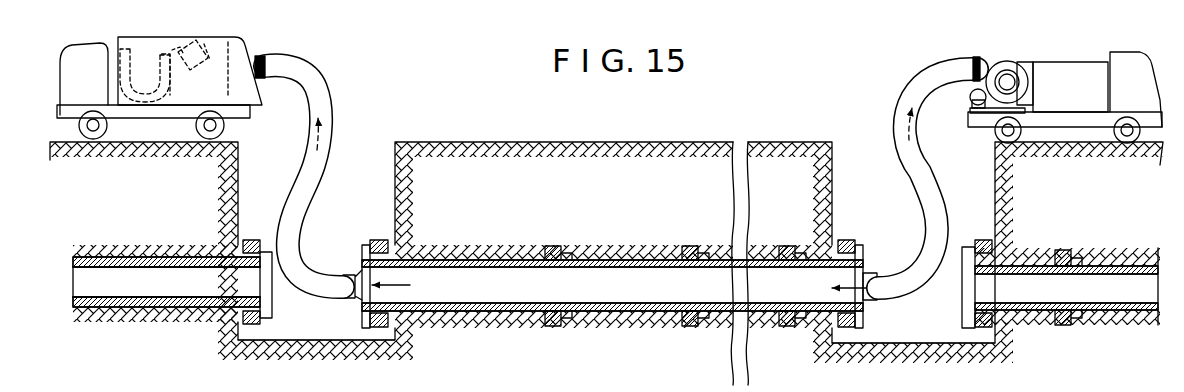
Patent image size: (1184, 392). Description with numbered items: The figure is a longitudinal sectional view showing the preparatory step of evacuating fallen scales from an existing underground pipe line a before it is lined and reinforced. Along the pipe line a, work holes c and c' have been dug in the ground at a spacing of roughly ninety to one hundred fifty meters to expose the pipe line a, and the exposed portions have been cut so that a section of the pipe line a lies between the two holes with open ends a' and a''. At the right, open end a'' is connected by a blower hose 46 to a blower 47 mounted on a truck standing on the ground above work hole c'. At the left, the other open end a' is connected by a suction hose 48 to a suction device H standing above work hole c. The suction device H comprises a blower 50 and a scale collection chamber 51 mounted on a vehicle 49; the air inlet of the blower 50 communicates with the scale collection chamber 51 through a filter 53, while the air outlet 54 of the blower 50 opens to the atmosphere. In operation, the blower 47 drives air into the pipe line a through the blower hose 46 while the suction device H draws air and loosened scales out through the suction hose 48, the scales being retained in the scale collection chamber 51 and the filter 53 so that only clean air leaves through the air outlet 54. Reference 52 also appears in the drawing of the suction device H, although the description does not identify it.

The blower hose 46 is at (941, 212).
The blower 47 is at (1009, 62).
The suction hose 48 is at (326, 107).
The vehicle 49 is at (75, 62).
The blower 50 is at (140, 100).
The scale collection chamber 51 is at (206, 43).
The inlet connection 52 is at (186, 46).
The filter 53 is at (193, 71).
The air outlet 54 is at (170, 97).
The suction device H is at (118, 36).
The pipe line a is at (615, 271).
The open end a' is at (350, 302).
The open end a'' is at (877, 302).
The work hole c is at (316, 236).
The work hole c' is at (913, 243).